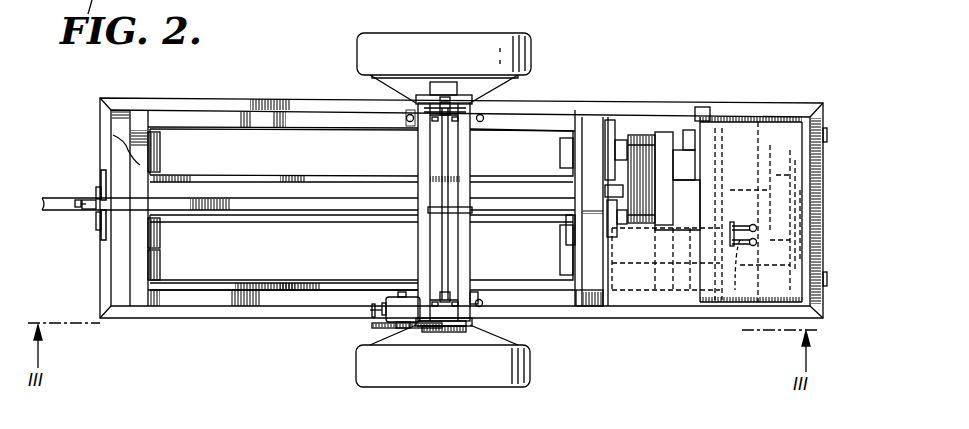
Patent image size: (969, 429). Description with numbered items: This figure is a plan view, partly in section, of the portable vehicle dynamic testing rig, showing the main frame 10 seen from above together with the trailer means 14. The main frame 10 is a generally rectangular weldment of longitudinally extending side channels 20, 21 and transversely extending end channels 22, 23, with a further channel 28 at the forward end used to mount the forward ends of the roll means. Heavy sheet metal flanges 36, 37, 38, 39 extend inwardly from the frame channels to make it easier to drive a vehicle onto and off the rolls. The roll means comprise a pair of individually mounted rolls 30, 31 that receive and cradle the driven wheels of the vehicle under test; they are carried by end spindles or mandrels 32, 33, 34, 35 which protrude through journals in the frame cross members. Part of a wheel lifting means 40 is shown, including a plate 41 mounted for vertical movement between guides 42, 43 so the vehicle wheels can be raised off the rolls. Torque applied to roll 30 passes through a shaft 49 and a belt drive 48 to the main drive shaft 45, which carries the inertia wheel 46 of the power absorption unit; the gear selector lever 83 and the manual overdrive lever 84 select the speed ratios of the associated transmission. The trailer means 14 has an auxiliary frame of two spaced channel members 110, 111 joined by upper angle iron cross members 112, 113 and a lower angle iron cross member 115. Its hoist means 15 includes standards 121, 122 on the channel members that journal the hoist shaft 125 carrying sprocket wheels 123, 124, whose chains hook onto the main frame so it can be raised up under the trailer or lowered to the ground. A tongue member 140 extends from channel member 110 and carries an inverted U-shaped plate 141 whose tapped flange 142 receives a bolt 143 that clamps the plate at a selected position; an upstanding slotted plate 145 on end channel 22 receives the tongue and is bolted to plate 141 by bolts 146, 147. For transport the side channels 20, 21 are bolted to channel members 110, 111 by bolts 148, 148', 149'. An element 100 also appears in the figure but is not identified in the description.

The main frame 10 is at (640, 70).
The trailer means 14 is at (374, 34).
The hoist means 15 is at (393, 346).
The side channel 20 is at (270, 103).
The side channel 21 is at (268, 312).
The end channel 22 is at (104, 126).
The end channel 23 is at (824, 115).
The channel 28 is at (138, 118).
The roll 30 is at (361, 155).
The roll 31 is at (361, 252).
The spindle or mandrel 32 is at (579, 150).
The spindle or mandrel 33 is at (155, 136).
The spindle or mandrel 34 is at (148, 258).
The spindle or mandrel 35 is at (586, 266).
The sheet metal flange 36 is at (215, 118).
The sheet metal flange 37 is at (125, 296).
The sheet metal flange 38 is at (195, 298).
The sheet metal flange 39 is at (590, 298).
The wheel lifting means 40 is at (180, 219).
The lifting plate 41 is at (335, 228).
The guide 42 is at (160, 240).
The guide 43 is at (566, 230).
The main drive shaft 45 is at (616, 222).
The inertia wheel 46 is at (664, 228).
The belt drive 48 is at (634, 137).
The shaft 49 is at (622, 150).
The gear selector lever 83 is at (752, 246).
The manual overdrive lever 84 is at (752, 228).
The control box 100 is at (745, 122).
The channel member 110 is at (426, 146).
The channel member 111 is at (466, 165).
The upper angle iron cross member 112 is at (452, 115).
The upper angle iron cross member 113 is at (452, 290).
The lower angle iron cross member 115 is at (484, 303).
The support flange or standard 121 is at (472, 211).
The support flange or standard 122 is at (460, 335).
The sprocket wheel 123 is at (460, 109).
The sprocket wheel 124 is at (460, 312).
The hoist means shaft 125 is at (442, 252).
The tongue member 140 is at (205, 200).
The inverted U-shaped plate 141 is at (103, 205).
The flange 142 is at (87, 200).
The bolt 143 is at (78, 208).
The upstanding plate or flange 145 is at (102, 172).
The bolt 146 is at (98, 226).
The bolt 147 is at (98, 188).
The bolt 148 is at (380, 118).
The bolt 148' is at (511, 119).
The bolt 149' is at (512, 279).